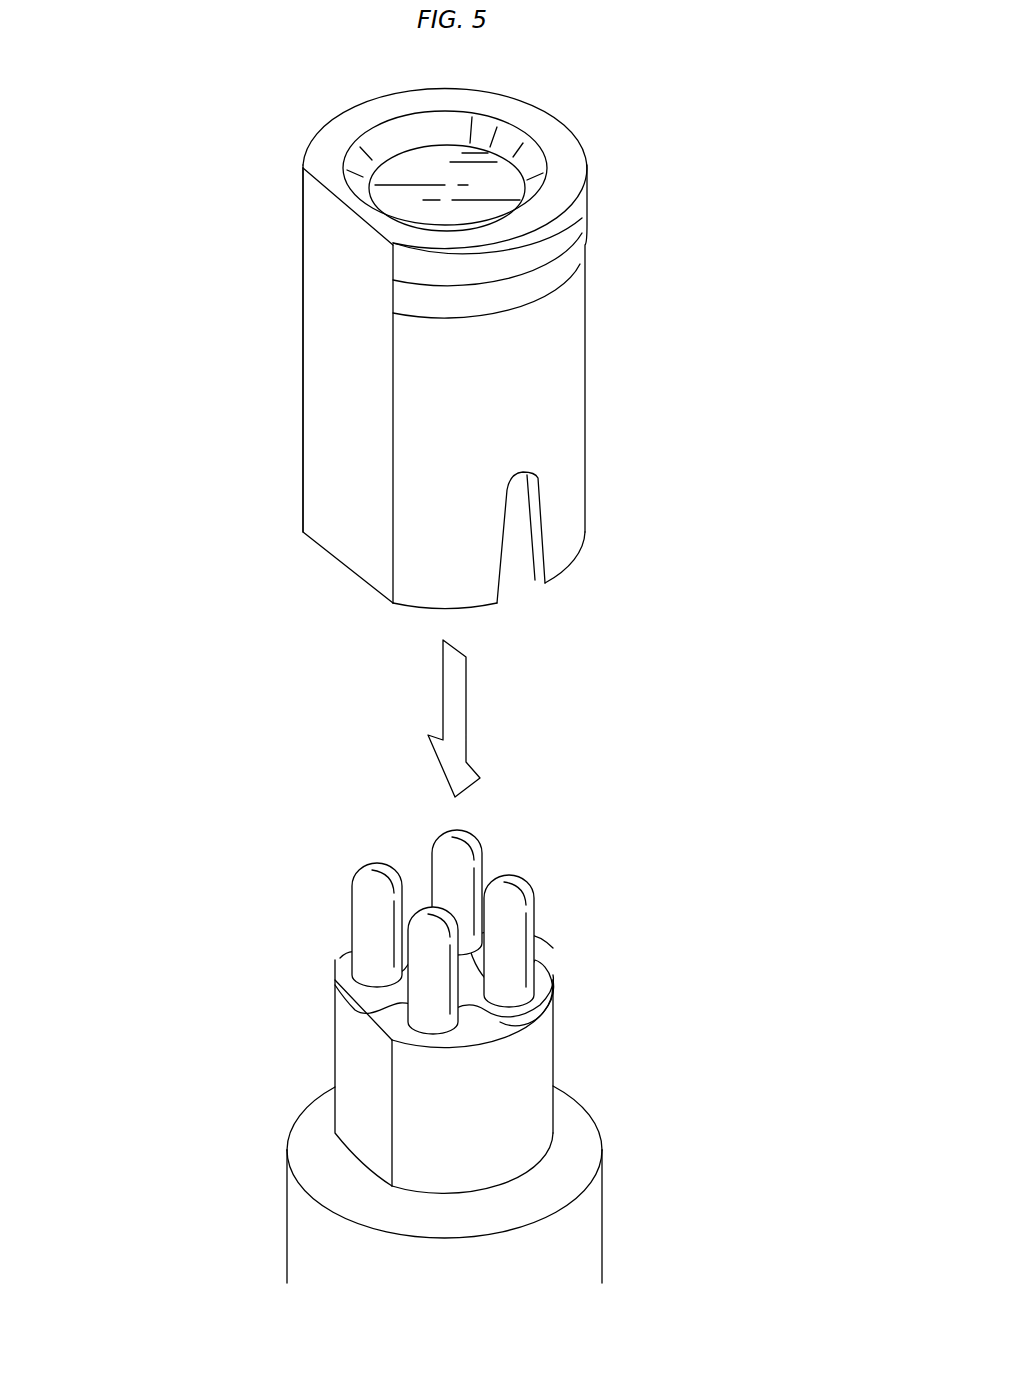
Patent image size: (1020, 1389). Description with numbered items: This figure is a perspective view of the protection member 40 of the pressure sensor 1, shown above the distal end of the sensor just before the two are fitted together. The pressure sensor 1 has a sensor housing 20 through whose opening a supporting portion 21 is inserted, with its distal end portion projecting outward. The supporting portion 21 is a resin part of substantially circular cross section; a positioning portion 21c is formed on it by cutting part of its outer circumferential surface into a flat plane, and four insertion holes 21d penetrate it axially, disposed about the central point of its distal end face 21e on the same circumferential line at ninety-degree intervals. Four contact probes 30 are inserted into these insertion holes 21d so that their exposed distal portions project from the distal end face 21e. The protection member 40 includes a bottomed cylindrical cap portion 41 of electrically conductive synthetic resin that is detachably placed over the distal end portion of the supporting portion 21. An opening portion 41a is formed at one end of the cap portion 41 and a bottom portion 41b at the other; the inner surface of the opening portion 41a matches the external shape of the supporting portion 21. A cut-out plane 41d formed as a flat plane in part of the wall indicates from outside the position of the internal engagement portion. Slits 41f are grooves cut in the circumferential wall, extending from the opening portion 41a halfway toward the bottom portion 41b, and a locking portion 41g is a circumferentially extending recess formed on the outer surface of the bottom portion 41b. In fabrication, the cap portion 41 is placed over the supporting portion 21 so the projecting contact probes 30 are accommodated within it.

The pressure sensor 1 is at (479, 1029).
The sensor housing 20 is at (618, 1234).
The supporting portion 21 is at (444, 1062).
The positioning portion 21c is at (355, 1062).
The insertion holes 21d is at (355, 1010).
The distal end face 21e is at (478, 1020).
The contact probes 30 is at (420, 895).
The protection member 40 is at (468, 345).
The cap portion 41 is at (596, 407).
The opening portion 41a is at (563, 572).
The bottom portion 41b is at (362, 118).
The cut-out plane 41d is at (333, 348).
The slits 41f is at (537, 548).
The locking portion 41g is at (573, 210).